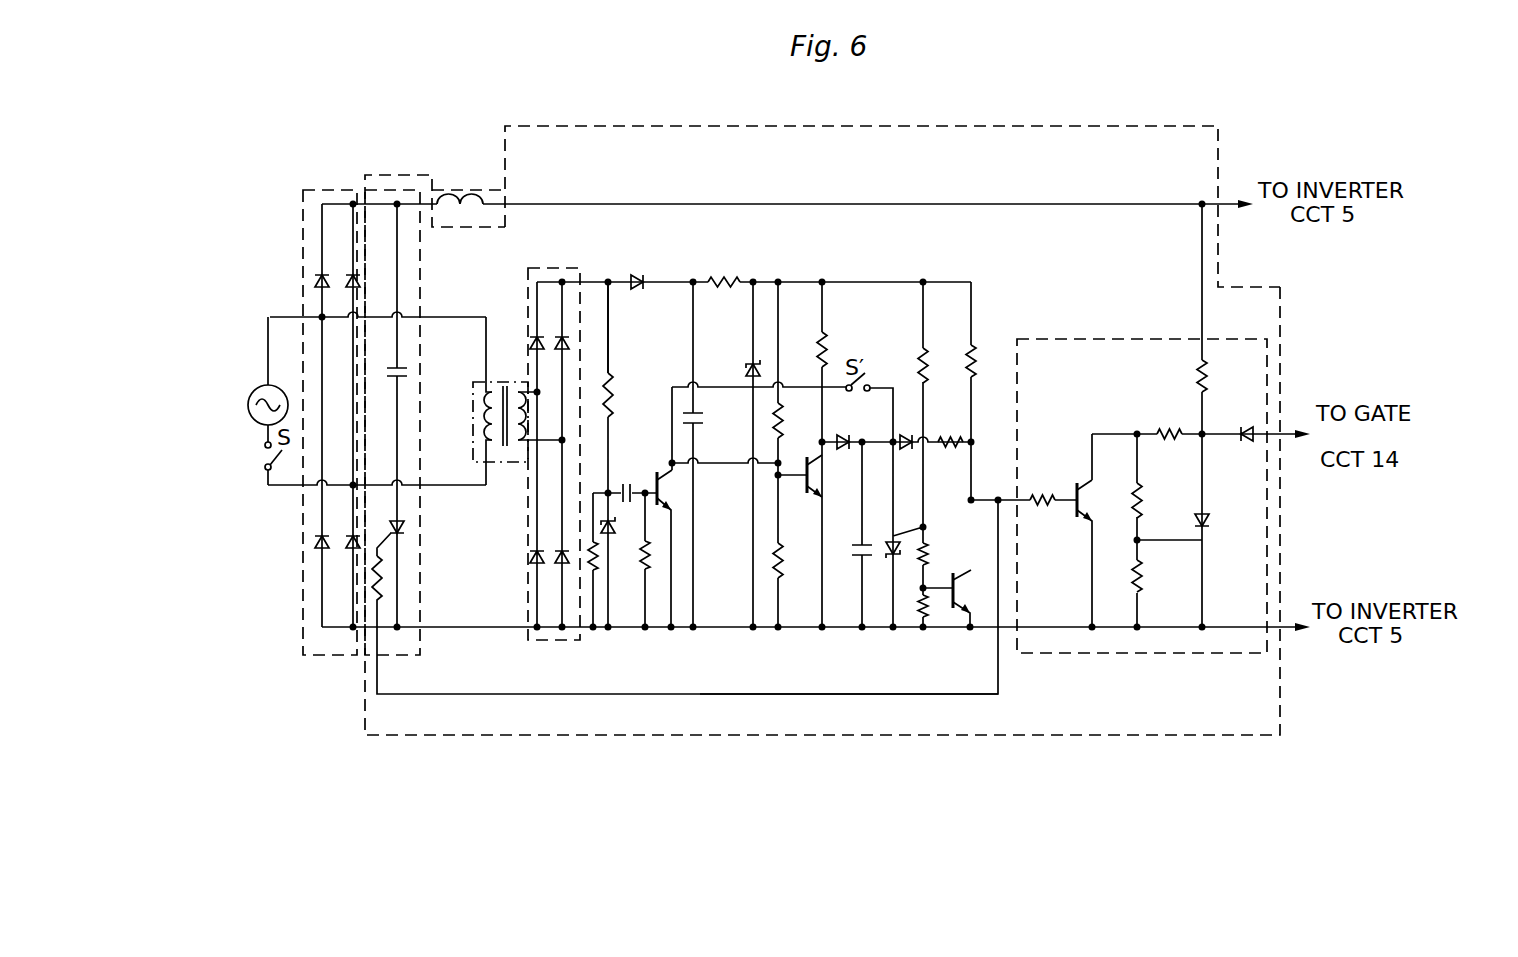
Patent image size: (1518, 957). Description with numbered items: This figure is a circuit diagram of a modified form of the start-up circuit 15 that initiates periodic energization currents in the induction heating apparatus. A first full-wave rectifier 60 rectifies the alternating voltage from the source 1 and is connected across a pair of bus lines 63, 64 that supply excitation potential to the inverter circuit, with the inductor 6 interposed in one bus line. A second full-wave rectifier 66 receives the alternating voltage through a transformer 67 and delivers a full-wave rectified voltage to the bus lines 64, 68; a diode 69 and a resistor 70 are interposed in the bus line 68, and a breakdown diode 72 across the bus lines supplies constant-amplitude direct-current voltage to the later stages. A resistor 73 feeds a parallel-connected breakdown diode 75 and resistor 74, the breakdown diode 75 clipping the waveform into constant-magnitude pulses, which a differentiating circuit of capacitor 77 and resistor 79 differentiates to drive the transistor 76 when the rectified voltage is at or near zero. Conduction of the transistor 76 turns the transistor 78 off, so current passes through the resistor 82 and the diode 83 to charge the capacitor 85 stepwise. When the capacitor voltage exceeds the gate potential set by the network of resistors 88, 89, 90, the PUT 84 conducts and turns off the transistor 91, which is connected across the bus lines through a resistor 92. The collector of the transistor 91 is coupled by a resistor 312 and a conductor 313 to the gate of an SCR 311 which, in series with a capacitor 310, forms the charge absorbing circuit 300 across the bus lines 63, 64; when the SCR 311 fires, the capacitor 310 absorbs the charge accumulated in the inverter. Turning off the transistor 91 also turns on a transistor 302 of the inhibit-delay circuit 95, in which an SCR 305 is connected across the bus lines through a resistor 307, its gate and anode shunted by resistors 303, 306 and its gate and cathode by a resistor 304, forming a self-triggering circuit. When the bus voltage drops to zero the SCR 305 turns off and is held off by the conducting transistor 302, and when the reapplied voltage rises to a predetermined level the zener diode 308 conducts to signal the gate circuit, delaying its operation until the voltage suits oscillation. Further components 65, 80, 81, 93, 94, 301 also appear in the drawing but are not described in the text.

The source 1 is at (260, 398).
The inductor 6 is at (462, 196).
The start-up circuit 15 is at (873, 125).
The first full-wave rectifier 60 is at (327, 188).
The bus line 63 is at (718, 202).
The bus line 64 is at (720, 630).
The transformer 65 is at (475, 433).
The second full-wave rectifier 66 is at (540, 267).
The transformer 67 is at (607, 280).
The bus line 68 is at (707, 418).
The diode 69 is at (639, 278).
The resistor 70 is at (726, 279).
The breakdown diode 72 is at (748, 369).
The resistor 73 is at (614, 395).
The resistor 74 is at (598, 573).
The breakdown diode 75 is at (614, 528).
The transistor 76 is at (668, 490).
The capacitor 77 is at (629, 486).
The transistor 78 is at (813, 503).
The resistor 79 is at (650, 557).
The resistor 80 is at (783, 580).
The resistor 81 is at (784, 418).
The resistor 82 is at (825, 345).
The diode 83 is at (848, 437).
The PUT 84 is at (891, 540).
The capacitor 85 is at (858, 545).
The resistor 88 is at (920, 363).
The resistor 89 is at (928, 555).
The resistor 90 is at (922, 604).
The transistor 91 is at (960, 590).
The resistor 92 is at (976, 355).
The resistor 93 is at (946, 445).
The diode 94 is at (908, 437).
The inhibit-delay circuit 95 is at (1107, 655).
The charge absorbing circuit 300 is at (392, 175).
The resistor 301 is at (1041, 496).
The transistor 302 is at (1087, 498).
The resistor 303 is at (1140, 503).
The resistor 304 is at (1141, 580).
The SCR 305 is at (1210, 520).
The resistor 306 is at (1166, 432).
The resistor 307 is at (1198, 374).
The zener diode 308 is at (1247, 428).
The capacitor 310 is at (403, 366).
The SCR 311 is at (406, 530).
The resistor 312 is at (383, 580).
The conductor 313 is at (858, 695).